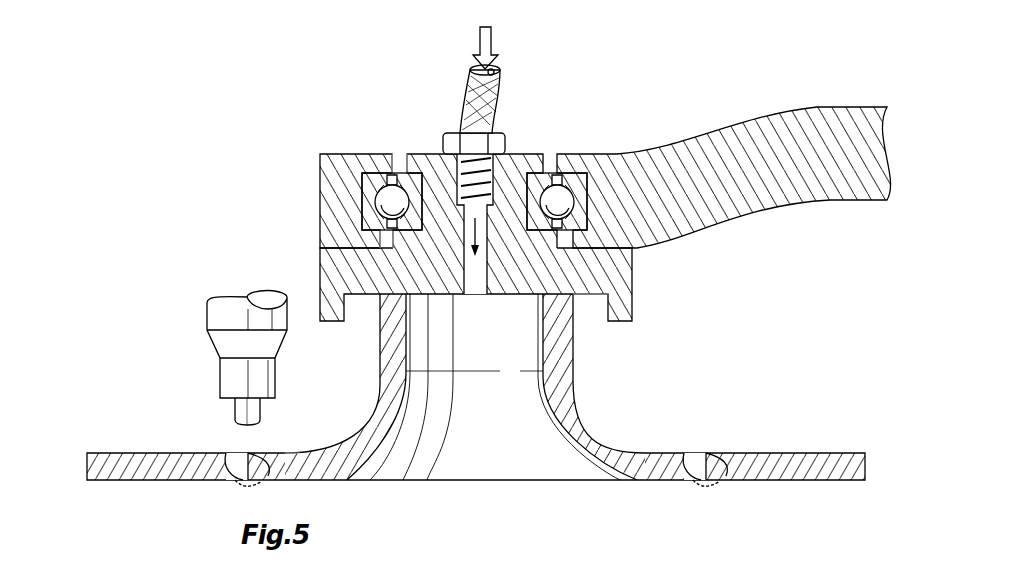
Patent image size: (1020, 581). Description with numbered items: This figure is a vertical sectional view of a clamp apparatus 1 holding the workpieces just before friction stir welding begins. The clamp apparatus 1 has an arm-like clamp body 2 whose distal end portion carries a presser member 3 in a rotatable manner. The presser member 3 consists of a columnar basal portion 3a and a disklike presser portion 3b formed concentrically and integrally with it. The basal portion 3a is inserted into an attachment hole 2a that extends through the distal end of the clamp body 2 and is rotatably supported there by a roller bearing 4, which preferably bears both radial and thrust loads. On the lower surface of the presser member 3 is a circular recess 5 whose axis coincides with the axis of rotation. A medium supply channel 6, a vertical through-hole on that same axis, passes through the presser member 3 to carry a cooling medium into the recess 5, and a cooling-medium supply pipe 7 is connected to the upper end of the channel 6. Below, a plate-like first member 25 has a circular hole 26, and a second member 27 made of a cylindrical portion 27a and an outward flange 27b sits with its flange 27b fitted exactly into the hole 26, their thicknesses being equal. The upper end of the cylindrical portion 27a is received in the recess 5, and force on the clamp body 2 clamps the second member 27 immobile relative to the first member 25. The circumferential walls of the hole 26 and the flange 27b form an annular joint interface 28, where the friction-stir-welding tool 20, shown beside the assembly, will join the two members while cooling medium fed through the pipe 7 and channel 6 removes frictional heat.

The clamp apparatus 1 is at (656, 141).
The clamp body 2 is at (837, 117).
The attachment hole 2a is at (399, 160).
The presser member 3 is at (618, 264).
The basal portion 3a is at (517, 155).
The presser portion 3b is at (320, 268).
The roller bearing 4 is at (371, 177).
The recess 5 is at (580, 296).
The medium supply channel 6 is at (480, 290).
The cooling-medium supply pipe 7 is at (468, 82).
The friction-stir-welding tool 20 is at (184, 352).
The first member 25 is at (814, 450).
The circular hole 26 is at (697, 450).
The second member 27 is at (597, 427).
The cylindrical portion 27a is at (390, 342).
The outward flange 27b is at (284, 453).
The annular joint interface 28 is at (247, 462).